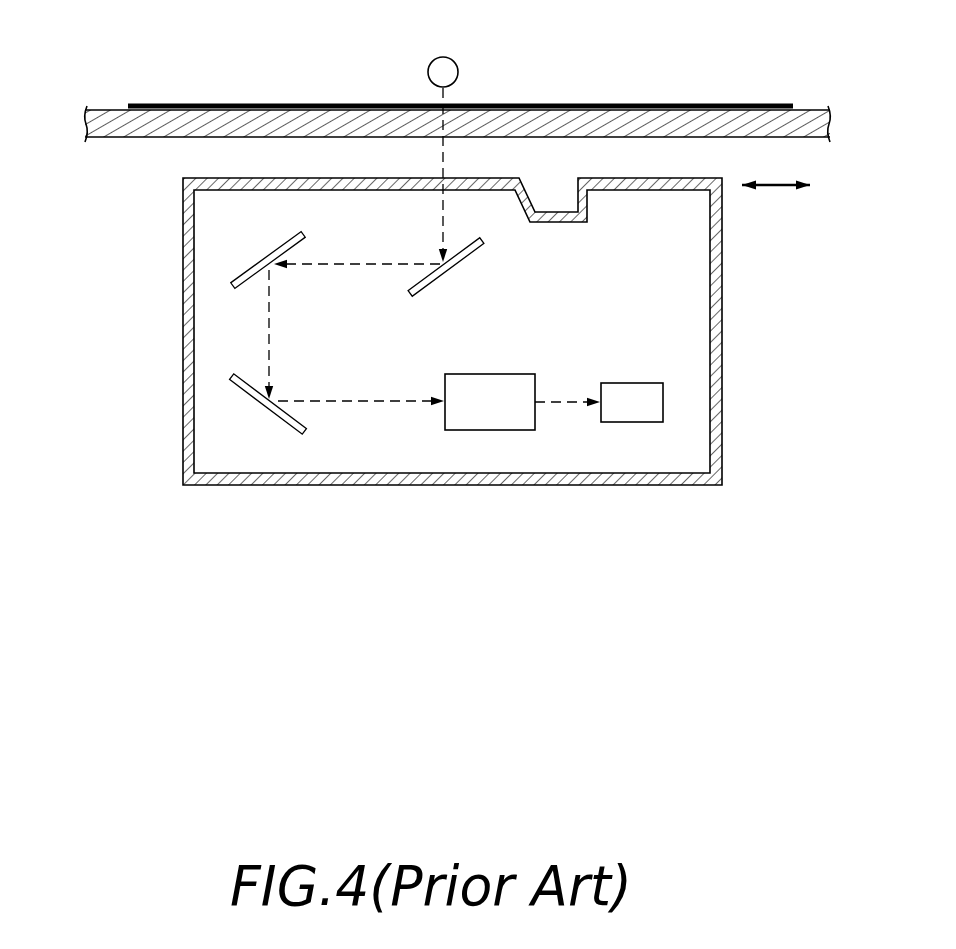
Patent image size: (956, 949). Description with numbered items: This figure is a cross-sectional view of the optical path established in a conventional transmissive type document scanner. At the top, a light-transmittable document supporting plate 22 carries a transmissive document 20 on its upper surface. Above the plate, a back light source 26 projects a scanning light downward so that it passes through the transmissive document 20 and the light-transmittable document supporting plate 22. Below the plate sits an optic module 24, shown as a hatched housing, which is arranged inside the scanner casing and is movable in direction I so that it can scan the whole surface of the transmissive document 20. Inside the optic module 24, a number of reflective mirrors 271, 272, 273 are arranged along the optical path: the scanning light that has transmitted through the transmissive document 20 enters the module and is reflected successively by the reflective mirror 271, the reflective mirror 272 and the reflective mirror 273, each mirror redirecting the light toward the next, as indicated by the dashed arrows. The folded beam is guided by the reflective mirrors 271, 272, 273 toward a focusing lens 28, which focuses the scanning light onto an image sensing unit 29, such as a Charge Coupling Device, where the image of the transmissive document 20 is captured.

The transmissive document 20 is at (377, 106).
The light-transmittable document supporting plate 22 is at (235, 106).
The optic module 24 is at (183, 374).
The back light source 26 is at (458, 72).
The reflective mirror 271 is at (473, 255).
The reflective mirror 272 is at (257, 262).
The reflective mirror 273 is at (283, 425).
The focusing lens 28 is at (495, 422).
The image sensing unit 29 is at (633, 413).